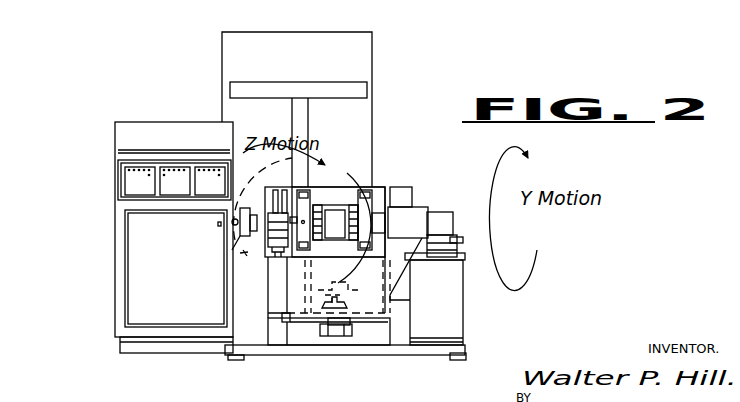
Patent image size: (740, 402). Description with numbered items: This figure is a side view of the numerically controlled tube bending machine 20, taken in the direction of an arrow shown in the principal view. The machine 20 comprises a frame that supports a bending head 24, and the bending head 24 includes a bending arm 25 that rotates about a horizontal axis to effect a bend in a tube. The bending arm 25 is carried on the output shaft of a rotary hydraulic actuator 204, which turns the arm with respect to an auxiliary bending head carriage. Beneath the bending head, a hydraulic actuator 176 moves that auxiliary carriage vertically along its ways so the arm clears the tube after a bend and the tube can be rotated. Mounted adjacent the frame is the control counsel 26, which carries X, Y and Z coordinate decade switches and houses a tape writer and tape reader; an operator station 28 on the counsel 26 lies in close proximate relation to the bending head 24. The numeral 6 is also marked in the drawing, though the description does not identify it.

The numerically controlled tube bending machine 20 is at (114, 91).
The control counsel 26 is at (160, 141).
The operator station 28 is at (170, 341).
The bracket 6 is at (255, 246).
The rotary hydraulic actuator 204 is at (340, 202).
The bending arm 25 is at (258, 284).
The bending head 24 is at (410, 172).
The hydraulic actuator 176 is at (337, 336).